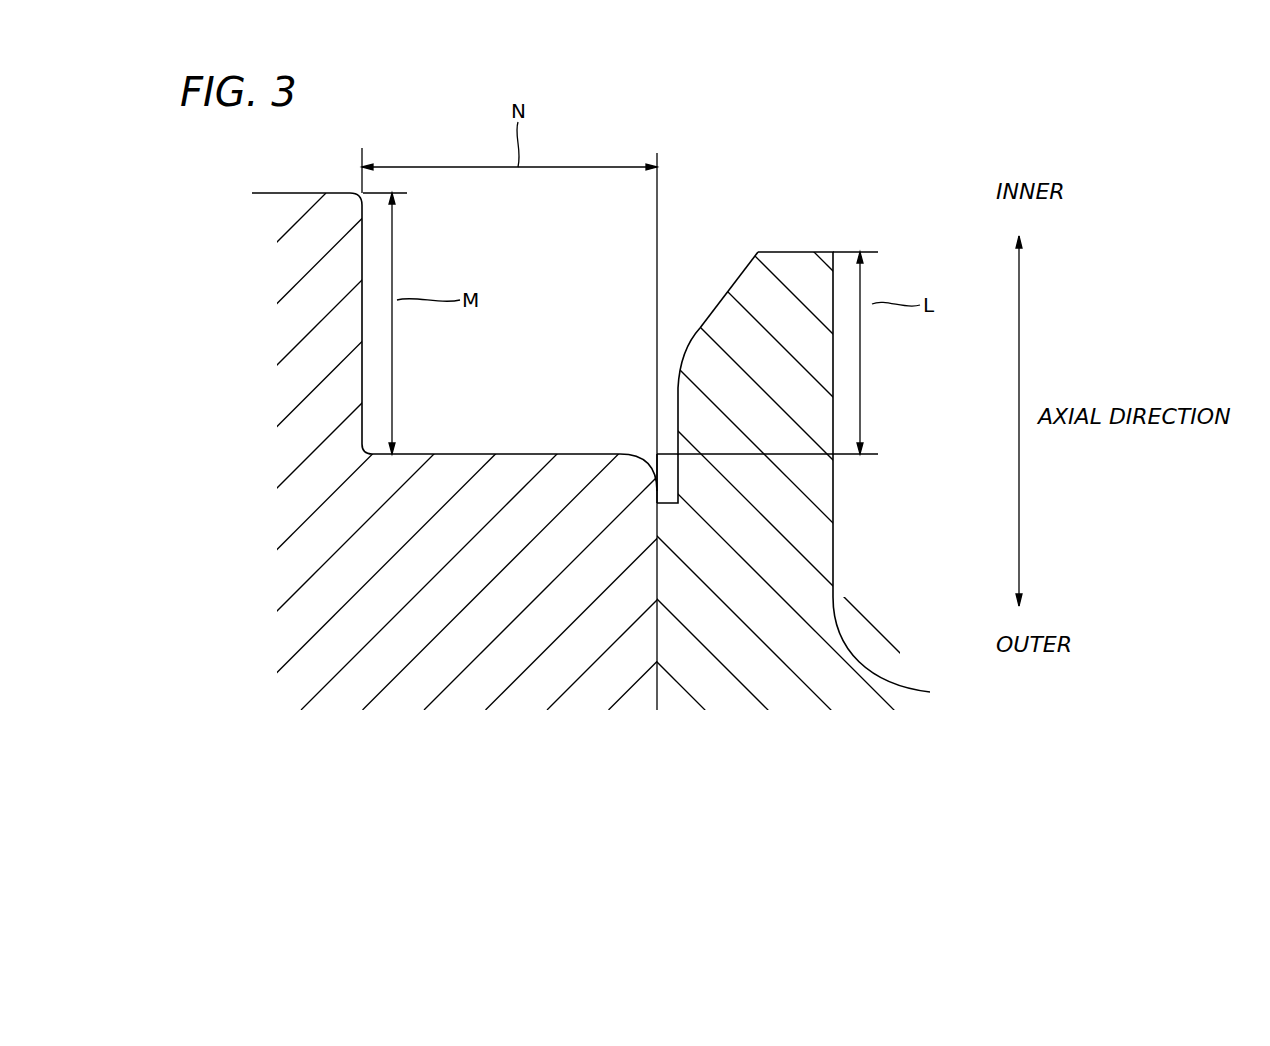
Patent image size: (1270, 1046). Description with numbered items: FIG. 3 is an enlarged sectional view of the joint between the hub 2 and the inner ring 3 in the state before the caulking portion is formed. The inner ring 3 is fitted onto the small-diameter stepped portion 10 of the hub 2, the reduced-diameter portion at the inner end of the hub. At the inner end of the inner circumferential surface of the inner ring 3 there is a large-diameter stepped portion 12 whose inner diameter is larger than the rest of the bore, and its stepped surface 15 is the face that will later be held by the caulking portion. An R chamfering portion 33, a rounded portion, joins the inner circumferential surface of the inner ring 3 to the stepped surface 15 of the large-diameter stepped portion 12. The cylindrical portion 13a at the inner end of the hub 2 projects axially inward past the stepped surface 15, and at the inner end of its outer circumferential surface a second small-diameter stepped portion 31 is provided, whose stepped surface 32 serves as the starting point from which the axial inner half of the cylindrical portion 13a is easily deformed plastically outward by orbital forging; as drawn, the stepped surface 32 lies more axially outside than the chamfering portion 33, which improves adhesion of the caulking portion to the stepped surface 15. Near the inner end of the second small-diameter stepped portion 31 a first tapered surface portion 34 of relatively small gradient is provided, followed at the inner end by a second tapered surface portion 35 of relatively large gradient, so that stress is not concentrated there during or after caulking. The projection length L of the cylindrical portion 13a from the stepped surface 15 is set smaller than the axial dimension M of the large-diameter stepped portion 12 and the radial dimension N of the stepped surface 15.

The hub 2 is at (804, 643).
The inner ring 3 is at (500, 646).
The small-diameter stepped portion 10 is at (654, 638).
The large-diameter stepped portion 12 is at (361, 325).
The cylindrical portion 13a is at (787, 378).
The stepped surface 15 is at (467, 454).
The second small-diameter stepped portion 31 is at (657, 449).
The stepped surface 32 is at (670, 494).
The R chamfering portion 33 is at (660, 457).
The first tapered surface portion 34 is at (692, 352).
The second tapered surface portion 35 is at (734, 284).